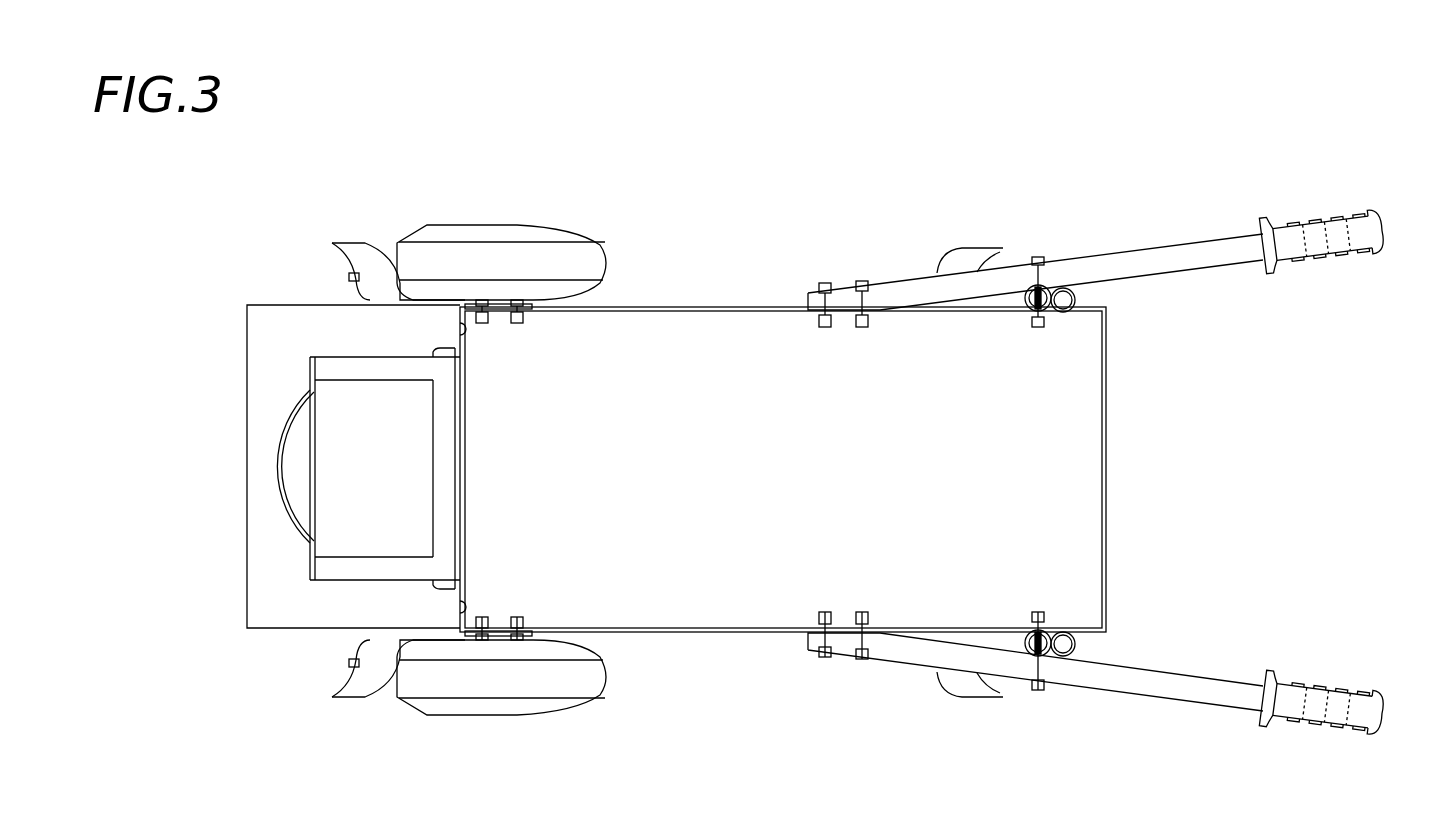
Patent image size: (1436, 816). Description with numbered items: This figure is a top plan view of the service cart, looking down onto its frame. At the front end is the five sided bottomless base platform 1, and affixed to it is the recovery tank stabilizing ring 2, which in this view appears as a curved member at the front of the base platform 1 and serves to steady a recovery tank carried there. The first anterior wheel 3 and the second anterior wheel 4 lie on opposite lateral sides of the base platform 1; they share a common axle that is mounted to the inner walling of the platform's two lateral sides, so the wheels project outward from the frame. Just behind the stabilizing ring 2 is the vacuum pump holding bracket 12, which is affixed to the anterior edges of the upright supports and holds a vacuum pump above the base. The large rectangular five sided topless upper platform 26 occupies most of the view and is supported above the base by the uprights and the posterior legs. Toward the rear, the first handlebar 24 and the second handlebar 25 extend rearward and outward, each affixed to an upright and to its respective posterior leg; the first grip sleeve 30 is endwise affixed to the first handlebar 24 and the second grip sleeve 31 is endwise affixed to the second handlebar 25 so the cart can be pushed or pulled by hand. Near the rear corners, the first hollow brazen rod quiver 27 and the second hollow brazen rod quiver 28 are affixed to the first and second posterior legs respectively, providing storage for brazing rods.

The base platform 1 is at (262, 581).
The recovery tank stabilizing ring 2 is at (277, 477).
The first anterior wheel 3 is at (540, 250).
The second anterior wheel 4 is at (482, 690).
The vacuum pump holding bracket 12 is at (333, 362).
The first handlebar 24 is at (1135, 258).
The second handlebar 25 is at (1207, 693).
The upper platform 26 is at (707, 335).
The first hollow brazen rod quiver 27 is at (1075, 298).
The second hollow brazen rod quiver 28 is at (1078, 647).
The first grip sleeve 30 is at (1302, 235).
The second grip sleeve 31 is at (1347, 690).